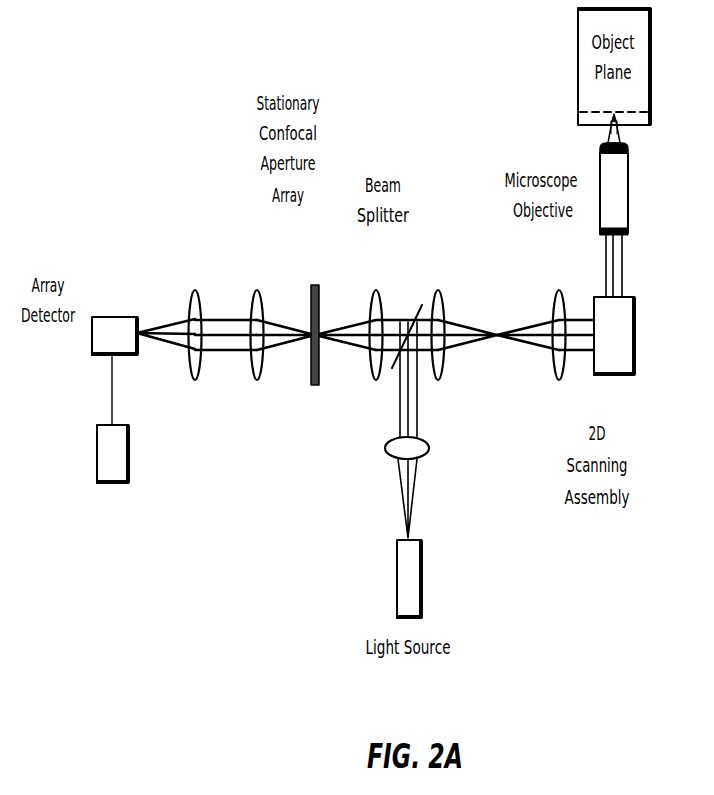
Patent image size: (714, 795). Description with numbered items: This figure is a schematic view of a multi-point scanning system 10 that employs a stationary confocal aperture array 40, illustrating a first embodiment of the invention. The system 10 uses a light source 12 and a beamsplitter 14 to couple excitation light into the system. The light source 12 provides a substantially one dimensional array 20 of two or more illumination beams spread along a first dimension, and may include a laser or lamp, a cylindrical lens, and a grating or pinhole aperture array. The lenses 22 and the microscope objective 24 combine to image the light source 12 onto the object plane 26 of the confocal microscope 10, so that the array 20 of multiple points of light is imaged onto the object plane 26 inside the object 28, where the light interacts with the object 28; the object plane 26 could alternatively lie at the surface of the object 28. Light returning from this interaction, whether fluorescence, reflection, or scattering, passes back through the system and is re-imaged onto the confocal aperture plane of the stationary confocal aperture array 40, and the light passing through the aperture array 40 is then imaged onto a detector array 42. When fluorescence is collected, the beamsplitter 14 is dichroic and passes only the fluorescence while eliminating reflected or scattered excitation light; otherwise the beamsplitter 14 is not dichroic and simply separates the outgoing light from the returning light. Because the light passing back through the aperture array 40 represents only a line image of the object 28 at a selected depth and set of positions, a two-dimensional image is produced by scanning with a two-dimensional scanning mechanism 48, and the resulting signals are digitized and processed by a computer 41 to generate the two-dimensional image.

The multi-point scanning system 10 is at (171, 107).
The light source 12 is at (421, 576).
The beamsplitter 14 is at (410, 294).
The one dimensional array of illumination beams 20 is at (497, 332).
The lenses 22 is at (438, 290).
The microscope objective 24 is at (600, 181).
The object plane 26 is at (648, 90).
The object 28 is at (650, 31).
The stationary confocal aperture array 40 is at (315, 265).
The computer 41 is at (97, 440).
The detector array 42 is at (92, 327).
The 2D scanning mechanism 48 is at (620, 376).